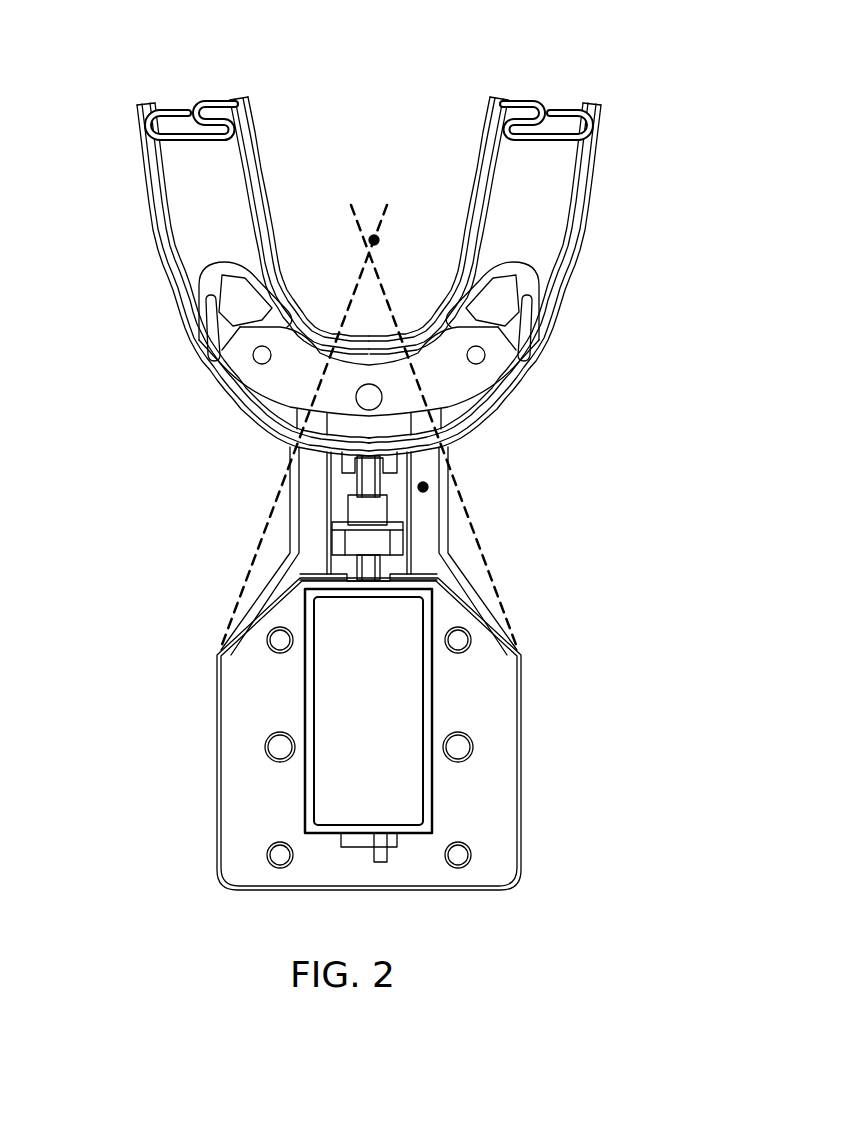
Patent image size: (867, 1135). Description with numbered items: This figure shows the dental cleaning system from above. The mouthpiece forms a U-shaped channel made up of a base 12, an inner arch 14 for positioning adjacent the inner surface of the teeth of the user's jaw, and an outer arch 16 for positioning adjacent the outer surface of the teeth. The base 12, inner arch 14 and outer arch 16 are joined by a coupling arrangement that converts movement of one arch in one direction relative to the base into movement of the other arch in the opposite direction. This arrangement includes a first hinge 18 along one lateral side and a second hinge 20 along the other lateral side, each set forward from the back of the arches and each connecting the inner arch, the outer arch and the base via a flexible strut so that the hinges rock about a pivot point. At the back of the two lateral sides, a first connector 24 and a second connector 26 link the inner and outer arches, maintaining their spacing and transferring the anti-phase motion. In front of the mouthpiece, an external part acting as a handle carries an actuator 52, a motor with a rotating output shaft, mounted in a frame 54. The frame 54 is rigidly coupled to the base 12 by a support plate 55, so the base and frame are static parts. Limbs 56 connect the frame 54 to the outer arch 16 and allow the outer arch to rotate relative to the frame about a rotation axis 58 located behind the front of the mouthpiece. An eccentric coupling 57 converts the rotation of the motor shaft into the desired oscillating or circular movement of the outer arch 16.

The base 12 is at (462, 380).
The inner arch 14 is at (268, 232).
The outer arch 16 is at (150, 217).
The first hinge 18 is at (540, 286).
The second hinge 20 is at (200, 283).
The first connector 24 is at (575, 108).
The second connector 26 is at (200, 108).
The actuator 52 is at (432, 690).
The frame 54 is at (520, 765).
The support plate 55 is at (428, 487).
The limbs 56 is at (252, 573).
The eccentric coupling 57 is at (330, 540).
The rotation axis 58 is at (374, 240).